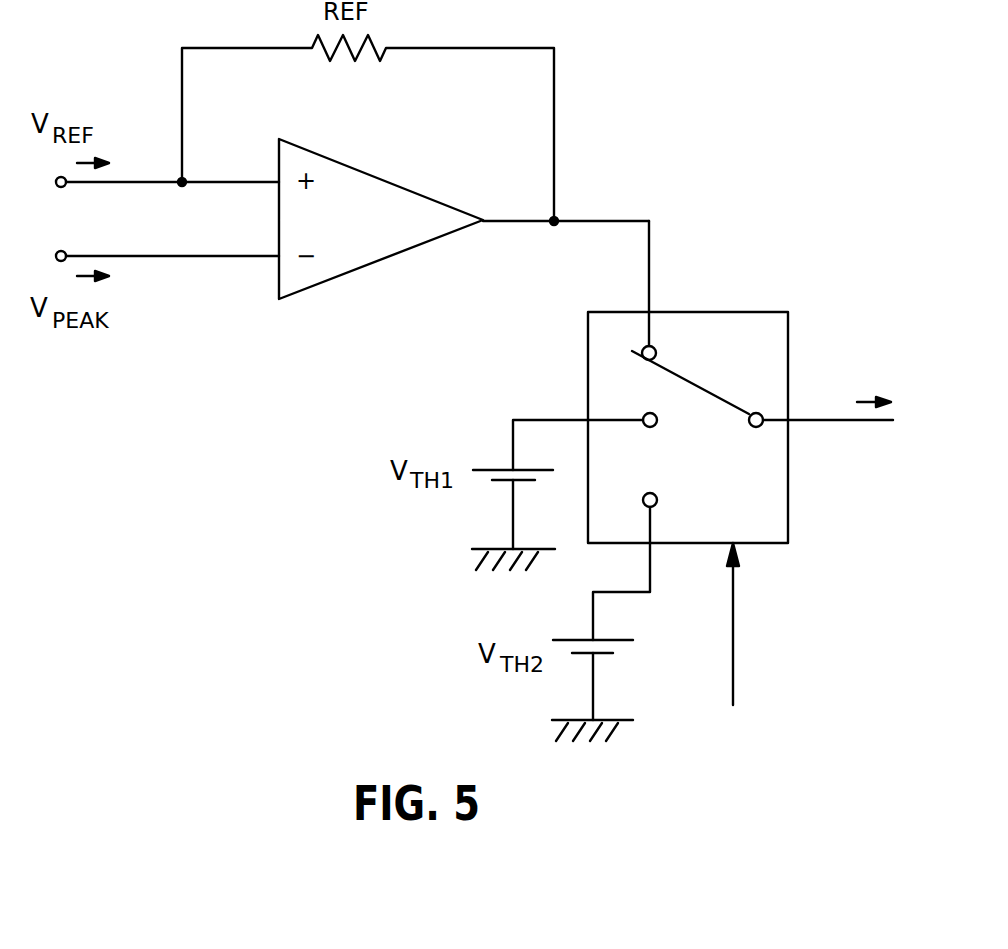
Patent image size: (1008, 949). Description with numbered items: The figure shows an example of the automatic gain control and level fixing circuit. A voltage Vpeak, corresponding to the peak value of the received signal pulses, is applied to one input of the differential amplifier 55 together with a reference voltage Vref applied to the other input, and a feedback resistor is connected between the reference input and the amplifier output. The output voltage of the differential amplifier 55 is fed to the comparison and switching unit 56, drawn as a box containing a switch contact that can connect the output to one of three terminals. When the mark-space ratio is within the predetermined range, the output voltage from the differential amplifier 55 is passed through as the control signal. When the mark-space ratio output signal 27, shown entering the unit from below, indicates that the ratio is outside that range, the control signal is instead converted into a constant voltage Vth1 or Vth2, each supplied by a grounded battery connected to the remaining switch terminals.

The differential amplifier 55 is at (400, 253).
The comparison and switching unit 56 is at (728, 312).
The mark-space ratio output signal 27 is at (733, 640).